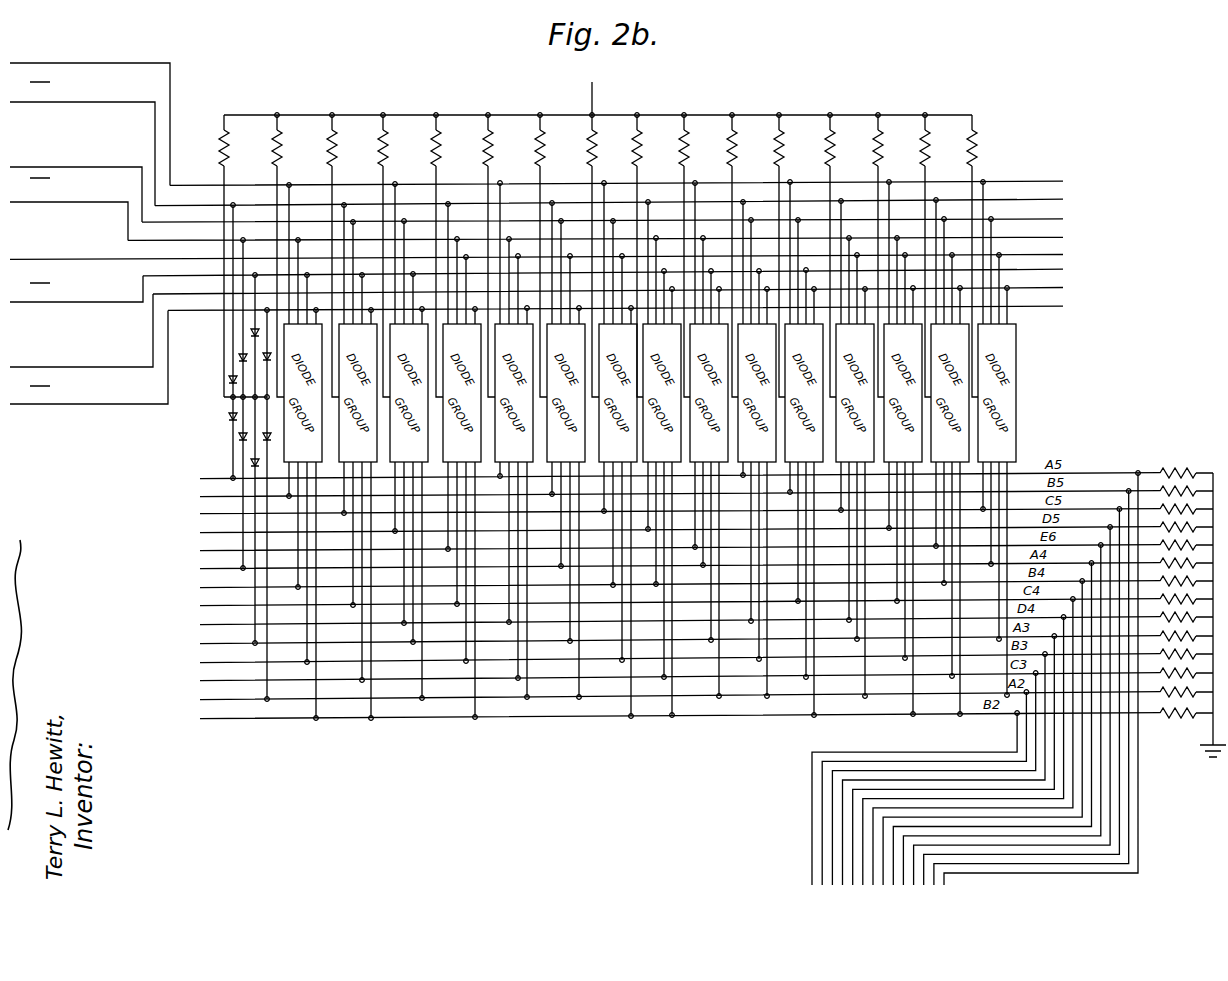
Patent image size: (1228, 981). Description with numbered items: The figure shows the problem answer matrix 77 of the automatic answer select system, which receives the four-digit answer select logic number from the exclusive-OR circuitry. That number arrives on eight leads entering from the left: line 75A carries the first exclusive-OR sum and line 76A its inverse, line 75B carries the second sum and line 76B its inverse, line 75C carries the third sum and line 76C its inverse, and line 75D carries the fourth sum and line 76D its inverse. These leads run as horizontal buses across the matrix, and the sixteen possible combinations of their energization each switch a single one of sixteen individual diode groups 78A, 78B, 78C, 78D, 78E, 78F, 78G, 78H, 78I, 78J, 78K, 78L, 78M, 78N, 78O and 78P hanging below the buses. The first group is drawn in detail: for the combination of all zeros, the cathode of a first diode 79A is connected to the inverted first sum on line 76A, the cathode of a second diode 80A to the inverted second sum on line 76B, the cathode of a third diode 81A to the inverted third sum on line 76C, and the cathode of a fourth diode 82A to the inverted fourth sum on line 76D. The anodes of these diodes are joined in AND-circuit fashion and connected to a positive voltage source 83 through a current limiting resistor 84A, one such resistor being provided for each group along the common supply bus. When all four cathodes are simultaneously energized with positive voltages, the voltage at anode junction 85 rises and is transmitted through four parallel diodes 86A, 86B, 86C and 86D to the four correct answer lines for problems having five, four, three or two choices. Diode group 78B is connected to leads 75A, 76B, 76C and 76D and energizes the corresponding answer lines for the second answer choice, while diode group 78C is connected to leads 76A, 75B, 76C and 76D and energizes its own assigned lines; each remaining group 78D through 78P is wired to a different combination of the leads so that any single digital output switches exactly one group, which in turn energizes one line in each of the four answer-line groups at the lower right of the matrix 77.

The line 75A is at (107, 64).
The line 76A is at (109, 104).
The line 75B is at (97, 169).
The line 76B is at (80, 204).
The line 75C is at (72, 262).
The line 76C is at (69, 306).
The line 75D is at (74, 366).
The line 76D is at (71, 406).
The problem answer matrix 77 is at (1088, 296).
The diode group 78A is at (185, 491).
The diode group 78B is at (297, 417).
The diode group 78C is at (352, 417).
The diode group 78D is at (403, 407).
The diode group 78E is at (456, 416).
The diode group 78F is at (508, 406).
The diode group 78G is at (560, 406).
The diode group 78H is at (612, 416).
The diode group 78I is at (656, 415).
The diode group 78J is at (703, 406).
The diode group 78K is at (751, 406).
The diode group 78L is at (798, 415).
The diode group 78M is at (849, 406).
The diode group 78N is at (897, 415).
The diode group 78O is at (944, 415).
The diode group 78P is at (991, 406).
The first diode 79A is at (229, 380).
The second diode 80A is at (239, 358).
The third diode 81A is at (251, 332).
The fourth diode 82A is at (263, 357).
The positive voltage source 83 is at (588, 94).
The current limiting resistor 84A is at (222, 153).
The anode junction 85 is at (231, 397).
The diode 86A is at (229, 417).
The diode 86B is at (239, 437).
The diode 86C is at (251, 463).
The diode 86D is at (268, 441).